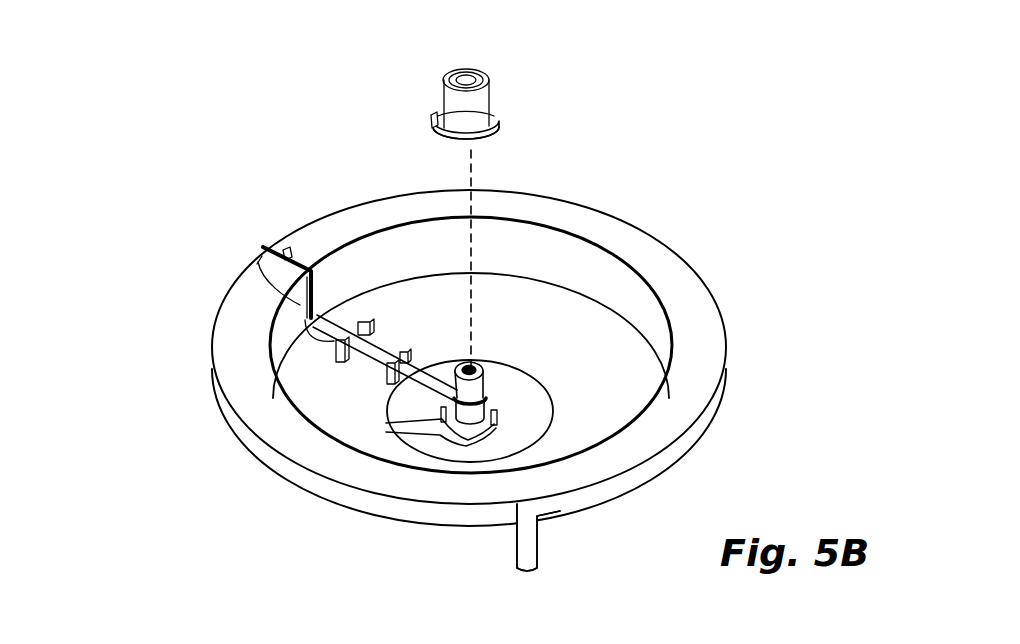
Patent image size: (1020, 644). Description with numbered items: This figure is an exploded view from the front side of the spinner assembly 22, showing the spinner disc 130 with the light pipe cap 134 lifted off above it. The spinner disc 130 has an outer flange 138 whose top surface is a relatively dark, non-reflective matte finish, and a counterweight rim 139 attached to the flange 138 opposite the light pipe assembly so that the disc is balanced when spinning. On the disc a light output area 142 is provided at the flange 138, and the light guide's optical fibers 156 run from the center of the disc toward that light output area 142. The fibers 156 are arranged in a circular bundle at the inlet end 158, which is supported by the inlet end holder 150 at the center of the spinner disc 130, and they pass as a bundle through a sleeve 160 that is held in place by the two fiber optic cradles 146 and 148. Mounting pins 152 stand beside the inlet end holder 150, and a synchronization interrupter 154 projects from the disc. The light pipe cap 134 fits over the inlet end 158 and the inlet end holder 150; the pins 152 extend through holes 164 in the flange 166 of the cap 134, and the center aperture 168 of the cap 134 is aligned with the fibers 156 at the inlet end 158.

The spinner assembly 22 is at (201, 392).
The spinner disc 130 is at (596, 203).
The light pipe cap 134 is at (498, 114).
The outer flange 138 is at (655, 256).
The counterweight rim 139 is at (680, 438).
The light output area 142 is at (262, 251).
The fiber optic cradle 146 is at (372, 321).
The fiber optic cradle 148 is at (405, 351).
The inlet end holder 150 is at (518, 369).
The mounting pins 152 is at (388, 427).
The synchronization interrupter 154 is at (522, 551).
The optical fibers 156 is at (474, 367).
The inlet end 158 is at (492, 392).
The sleeve 160 is at (392, 352).
The holes 164 is at (438, 120).
The flange 166 is at (488, 142).
The center aperture 168 is at (477, 73).